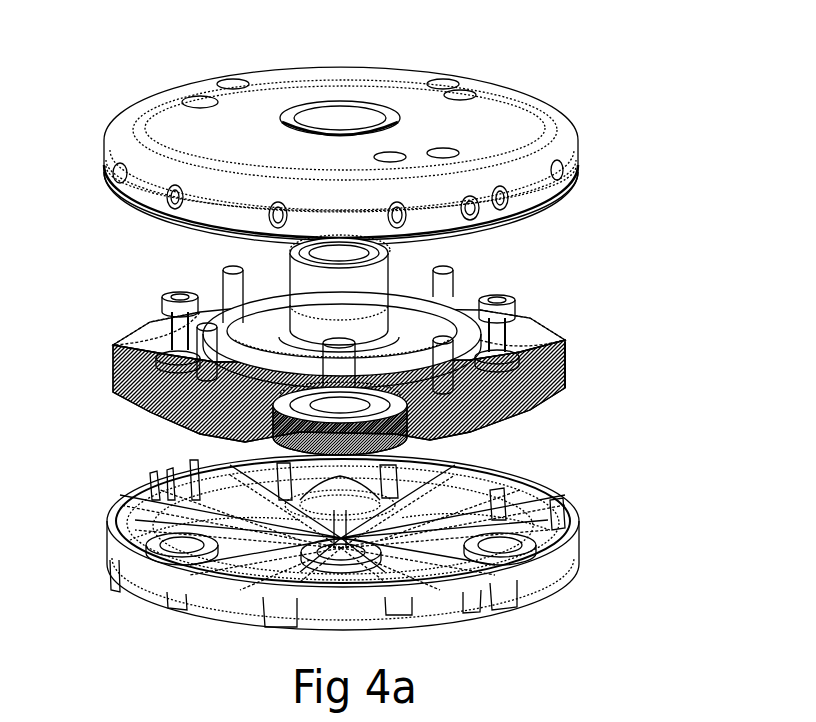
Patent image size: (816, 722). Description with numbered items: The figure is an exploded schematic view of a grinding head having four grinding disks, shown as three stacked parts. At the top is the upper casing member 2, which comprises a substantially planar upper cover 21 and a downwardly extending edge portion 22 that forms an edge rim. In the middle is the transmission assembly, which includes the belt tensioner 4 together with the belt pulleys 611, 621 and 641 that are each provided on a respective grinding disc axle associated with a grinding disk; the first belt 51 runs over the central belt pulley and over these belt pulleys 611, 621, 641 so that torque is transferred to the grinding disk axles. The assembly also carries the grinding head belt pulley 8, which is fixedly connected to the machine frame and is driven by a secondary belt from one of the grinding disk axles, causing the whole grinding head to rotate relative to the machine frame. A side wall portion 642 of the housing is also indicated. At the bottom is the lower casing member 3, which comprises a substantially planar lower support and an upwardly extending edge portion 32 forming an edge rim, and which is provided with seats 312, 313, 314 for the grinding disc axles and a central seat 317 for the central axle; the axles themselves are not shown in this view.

The upper casing member 2 is at (152, 72).
The upper cover 21 is at (485, 95).
The downwardly extending edge portion 22 is at (560, 147).
The belt tensioner 4 is at (130, 422).
The grinding head belt pulley 8 is at (450, 309).
The first belt 51 is at (535, 406).
The belt pulley 641 is at (547, 350).
The housing side wall 642 is at (565, 366).
The belt pulley 621 is at (113, 356).
The belt pulley 611 is at (403, 417).
The lower casing member 3 is at (580, 588).
The upwardly extending edge portion 32 is at (147, 575).
The seat 312 is at (185, 545).
The seat 313 is at (340, 507).
The seat 314 is at (477, 550).
The seat 317 is at (360, 552).